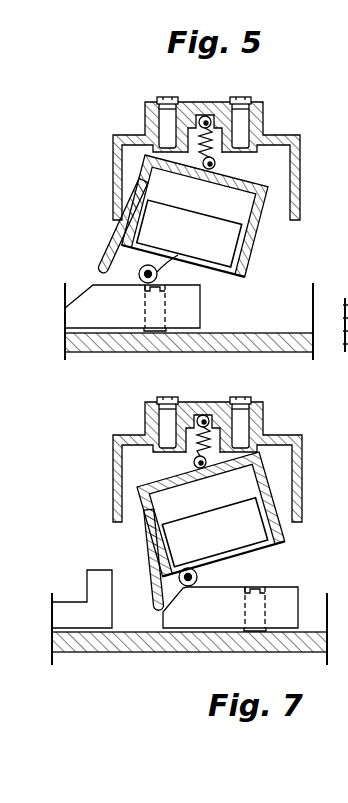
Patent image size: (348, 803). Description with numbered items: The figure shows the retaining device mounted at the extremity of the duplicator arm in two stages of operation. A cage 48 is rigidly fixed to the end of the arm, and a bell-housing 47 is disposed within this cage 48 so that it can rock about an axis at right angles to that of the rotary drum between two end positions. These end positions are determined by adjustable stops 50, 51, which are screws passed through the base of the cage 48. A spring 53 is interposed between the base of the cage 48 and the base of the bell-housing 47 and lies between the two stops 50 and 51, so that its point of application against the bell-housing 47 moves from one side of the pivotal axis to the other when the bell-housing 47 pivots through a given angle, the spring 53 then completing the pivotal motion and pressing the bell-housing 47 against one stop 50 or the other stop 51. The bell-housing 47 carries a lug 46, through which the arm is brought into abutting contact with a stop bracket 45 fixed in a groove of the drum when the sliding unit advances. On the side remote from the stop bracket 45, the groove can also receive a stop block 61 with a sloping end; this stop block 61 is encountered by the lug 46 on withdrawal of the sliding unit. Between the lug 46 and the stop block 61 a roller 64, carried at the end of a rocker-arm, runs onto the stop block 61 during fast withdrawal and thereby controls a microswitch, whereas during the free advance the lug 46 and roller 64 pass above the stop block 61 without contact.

In FIG. 7, the stop bracket 45 is at (77, 608).
In FIG. 5, the lug 46 is at (110, 253).
In FIG. 7, the lug 46 is at (156, 589).
In FIG. 5, the bell-housing 47 is at (252, 257).
In FIG. 7, the bell-housing 47 is at (291, 544).
In FIG. 5, the cage 48 is at (300, 195).
In FIG. 7, the cage 48 is at (302, 465).
In FIG. 5, the adjustable stop 50 is at (156, 104).
In FIG. 5, the adjustable stop 51 is at (248, 102).
In FIG. 5, the spring 53 is at (215, 137).
In FIG. 5, the stop block 61 is at (200, 312).
In FIG. 7, the stop block 61 is at (292, 605).
In FIG. 7, the roller 64 is at (207, 576).